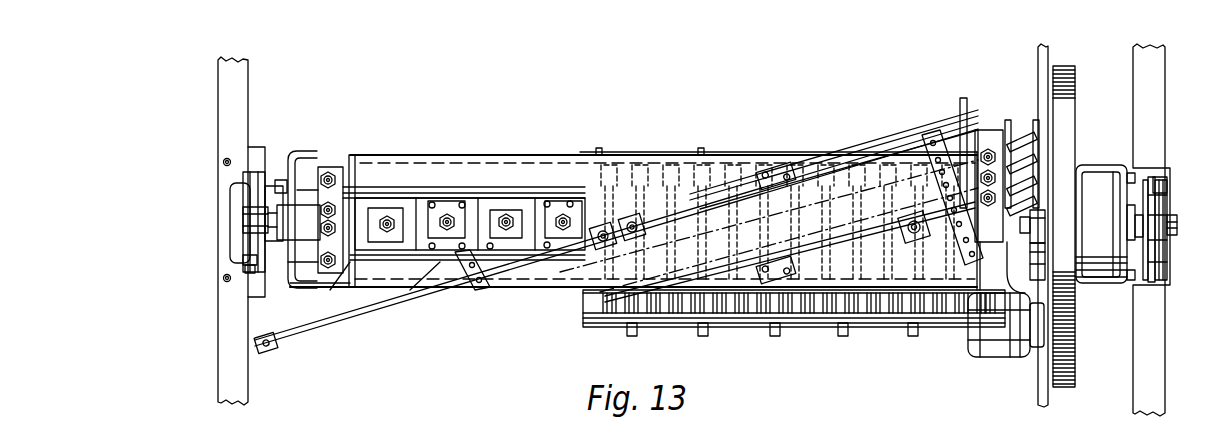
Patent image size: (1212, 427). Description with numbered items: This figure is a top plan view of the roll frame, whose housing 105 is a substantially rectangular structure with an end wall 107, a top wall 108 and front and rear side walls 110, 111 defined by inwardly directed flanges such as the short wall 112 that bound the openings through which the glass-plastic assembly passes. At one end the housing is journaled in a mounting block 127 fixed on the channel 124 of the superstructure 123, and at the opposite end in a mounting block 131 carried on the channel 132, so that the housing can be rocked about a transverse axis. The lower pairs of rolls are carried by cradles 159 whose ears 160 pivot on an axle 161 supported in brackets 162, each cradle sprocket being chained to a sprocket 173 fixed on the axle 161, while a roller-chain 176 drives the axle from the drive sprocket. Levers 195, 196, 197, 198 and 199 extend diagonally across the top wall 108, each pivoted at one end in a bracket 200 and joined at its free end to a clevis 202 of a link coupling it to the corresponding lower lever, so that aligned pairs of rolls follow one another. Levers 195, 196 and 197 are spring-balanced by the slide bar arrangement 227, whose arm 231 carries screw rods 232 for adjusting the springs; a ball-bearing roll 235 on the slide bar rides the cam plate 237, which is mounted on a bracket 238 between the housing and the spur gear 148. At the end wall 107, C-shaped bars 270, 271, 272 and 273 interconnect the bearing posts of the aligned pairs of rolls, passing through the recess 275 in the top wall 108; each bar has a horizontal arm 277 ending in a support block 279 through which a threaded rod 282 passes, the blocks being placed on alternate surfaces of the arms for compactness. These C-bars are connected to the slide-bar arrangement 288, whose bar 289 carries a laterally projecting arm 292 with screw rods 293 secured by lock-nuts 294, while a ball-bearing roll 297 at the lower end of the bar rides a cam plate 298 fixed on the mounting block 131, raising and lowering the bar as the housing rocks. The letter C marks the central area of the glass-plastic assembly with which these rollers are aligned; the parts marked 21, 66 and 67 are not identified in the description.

The slide block 21 is at (600, 218).
The shaft 66 is at (1172, 206).
The shaft collar 67 is at (1175, 228).
The housing 105 is at (382, 156).
The end wall 107 is at (262, 172).
The top wall 108 is at (410, 170).
The front side wall 110 is at (500, 292).
The rear side wall 111 is at (490, 157).
The inwardly directed flange 112 is at (528, 162).
The superstructure 123 is at (1167, 99).
The horizontally disposed channel 124 is at (1152, 118).
The mounting block 127 is at (1093, 182).
The mounting block 131 is at (238, 205).
The horizontally disposed channel 132 is at (238, 330).
The spur gear 148 is at (1068, 112).
The cradle 159 is at (612, 326).
The ears 160 is at (862, 312).
The axle 161 is at (950, 312).
The brackets 162 is at (667, 312).
The sprocket 173 is at (710, 312).
The roller-chain 176 is at (988, 352).
The lever 195 is at (825, 285).
The lever 196 is at (890, 175).
The lever 197 is at (865, 190).
The lever 198 is at (805, 172).
The lever 199 is at (412, 298).
The brackets 200 is at (765, 160).
The clevis 202 is at (278, 346).
The slide bar arrangement 227 is at (965, 142).
The laterally projecting arm 231 is at (988, 133).
The screw rods 232 is at (992, 204).
The ball-bearing roll 235 is at (1040, 222).
The cam plate 237 is at (1047, 240).
The bracket 238 is at (1046, 62).
The C-shaped bar 270 is at (475, 285).
The C-shaped bar 271 is at (355, 245).
The C-shaped bar 272 is at (370, 196).
The C-shaped bar 273 is at (412, 198).
The recess 275 is at (345, 275).
The arm 277 is at (372, 242).
The support block 279 is at (468, 217).
The threaded rod 282 is at (515, 212).
The slide-bar arrangement 288 is at (250, 263).
The slide bar 289 is at (256, 272).
The laterally projecting arm 292 is at (322, 170).
The screw rods 293 is at (324, 201).
The lock-nut 294 is at (322, 265).
The ball-bearing roll 297 is at (243, 232).
The cam plate 298 is at (252, 254).
The central area C is at (375, 143).